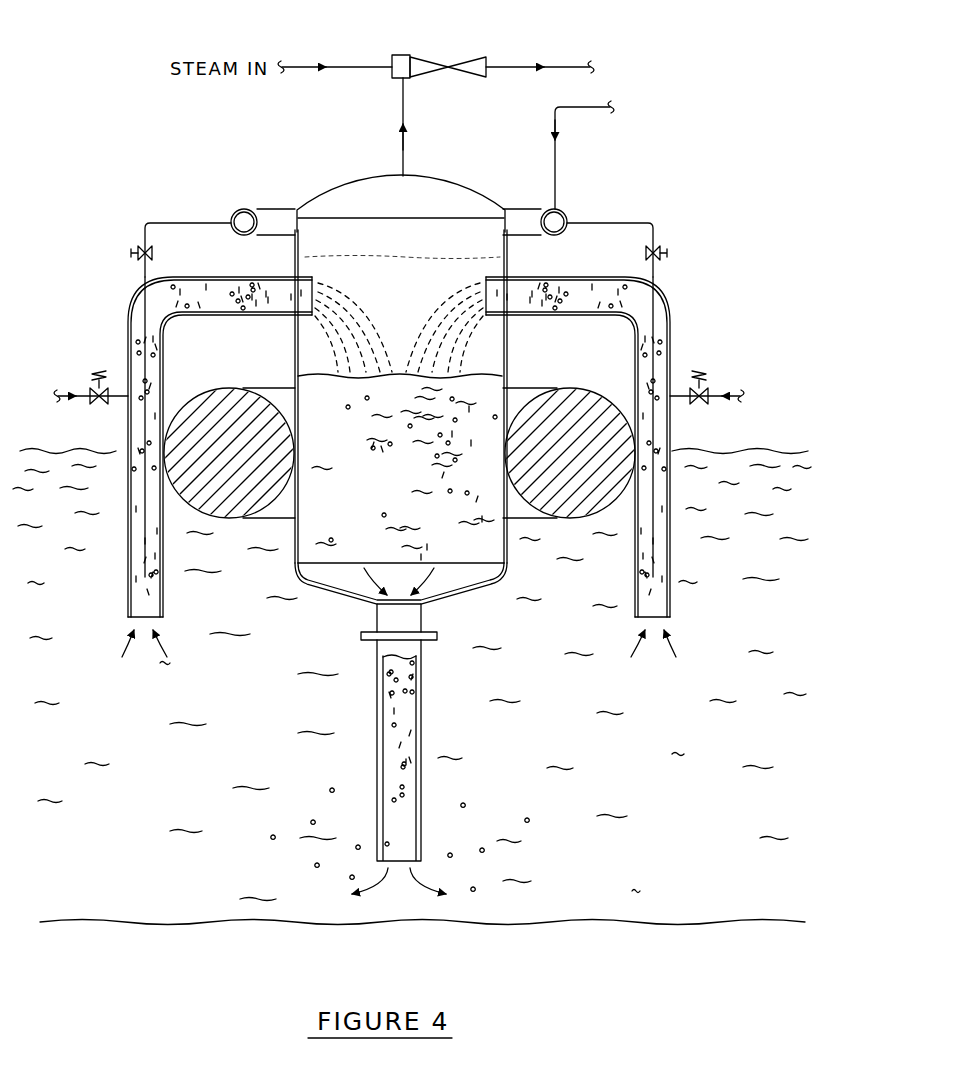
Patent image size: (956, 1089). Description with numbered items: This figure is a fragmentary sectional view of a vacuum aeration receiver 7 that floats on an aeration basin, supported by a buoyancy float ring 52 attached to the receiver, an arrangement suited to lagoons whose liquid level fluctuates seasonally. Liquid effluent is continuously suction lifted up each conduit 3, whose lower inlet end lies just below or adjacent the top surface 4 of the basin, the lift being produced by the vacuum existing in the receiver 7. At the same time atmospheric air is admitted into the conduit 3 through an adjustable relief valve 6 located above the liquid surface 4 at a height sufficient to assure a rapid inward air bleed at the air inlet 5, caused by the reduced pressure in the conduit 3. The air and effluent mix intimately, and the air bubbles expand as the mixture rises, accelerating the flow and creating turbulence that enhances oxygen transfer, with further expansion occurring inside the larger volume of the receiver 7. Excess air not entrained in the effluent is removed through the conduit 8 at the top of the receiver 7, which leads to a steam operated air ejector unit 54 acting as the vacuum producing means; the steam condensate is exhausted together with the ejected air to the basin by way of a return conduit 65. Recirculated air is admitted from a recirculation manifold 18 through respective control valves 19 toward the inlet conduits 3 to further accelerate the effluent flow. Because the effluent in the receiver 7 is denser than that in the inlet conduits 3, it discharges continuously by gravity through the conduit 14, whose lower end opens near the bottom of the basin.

The conduit 3 is at (128, 328).
The top surface 4 is at (714, 449).
The inlet 5 is at (394, 396).
The adjustable relief valve 6 is at (97, 386).
The receiver 7 is at (295, 357).
The conduit 8 is at (398, 145).
The conduit 14 is at (421, 732).
The recirculation manifold 18 is at (250, 210).
The control valve 19 is at (142, 245).
The buoyancy float ring 52 is at (565, 387).
The steam operated air ejector unit 54 is at (404, 54).
The return conduit 65 is at (555, 68).